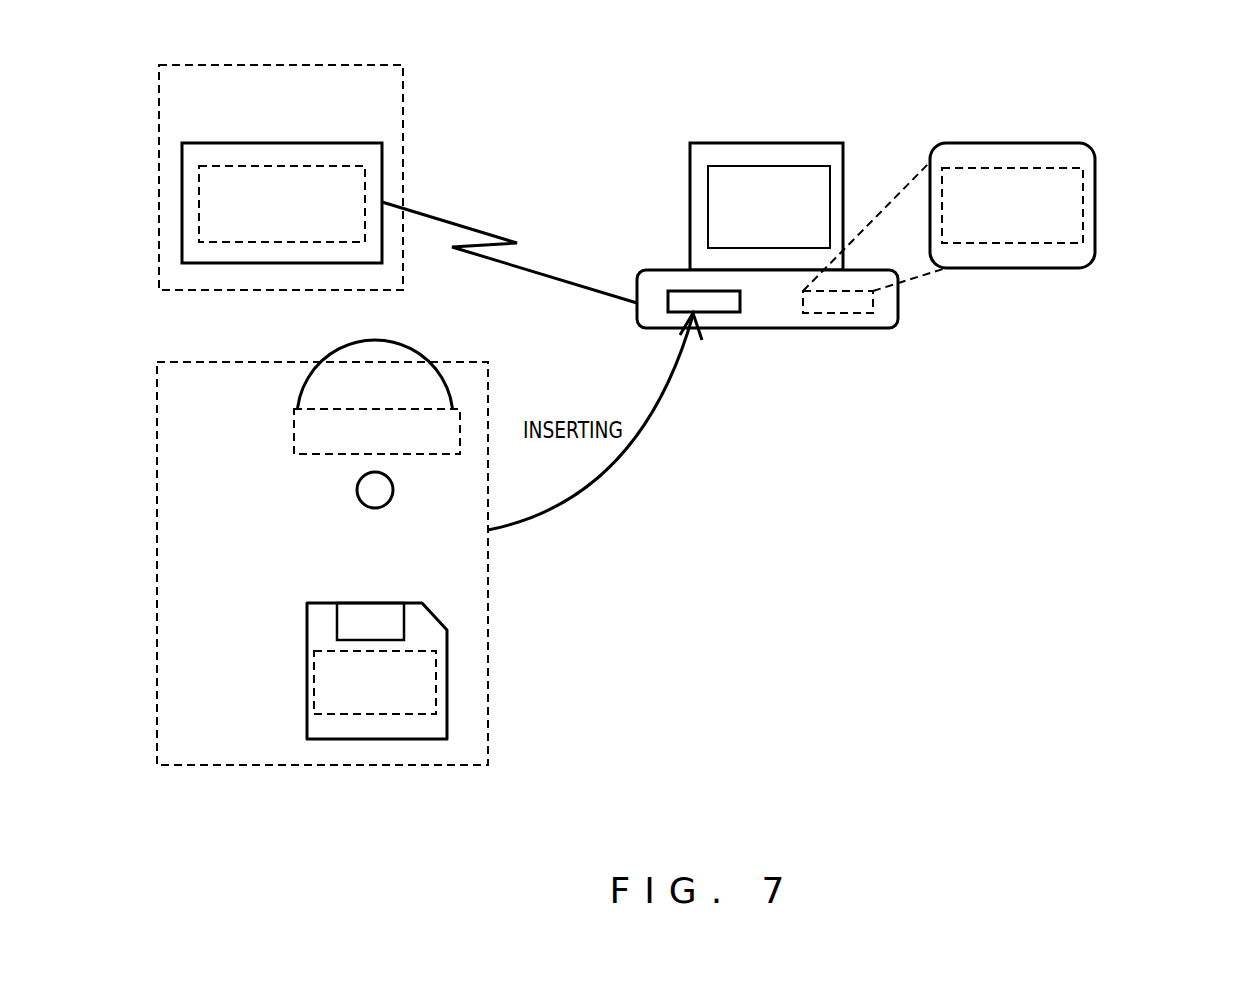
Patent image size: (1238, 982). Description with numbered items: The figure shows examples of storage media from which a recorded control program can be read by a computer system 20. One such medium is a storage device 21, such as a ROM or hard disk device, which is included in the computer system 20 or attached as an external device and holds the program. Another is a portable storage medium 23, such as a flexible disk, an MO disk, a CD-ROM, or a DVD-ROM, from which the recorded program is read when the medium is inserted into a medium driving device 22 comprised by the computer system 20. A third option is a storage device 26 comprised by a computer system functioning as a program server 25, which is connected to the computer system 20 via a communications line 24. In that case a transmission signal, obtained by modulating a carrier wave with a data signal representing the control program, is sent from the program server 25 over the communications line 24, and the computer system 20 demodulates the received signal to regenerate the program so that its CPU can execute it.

The computer system 20 is at (718, 142).
The storage device 21 is at (990, 143).
The medium driving device 22 is at (755, 328).
The portable storage medium 23 is at (322, 547).
The communications line 24 is at (509, 234).
The program server 25 is at (281, 155).
The storage device 26 is at (358, 142).